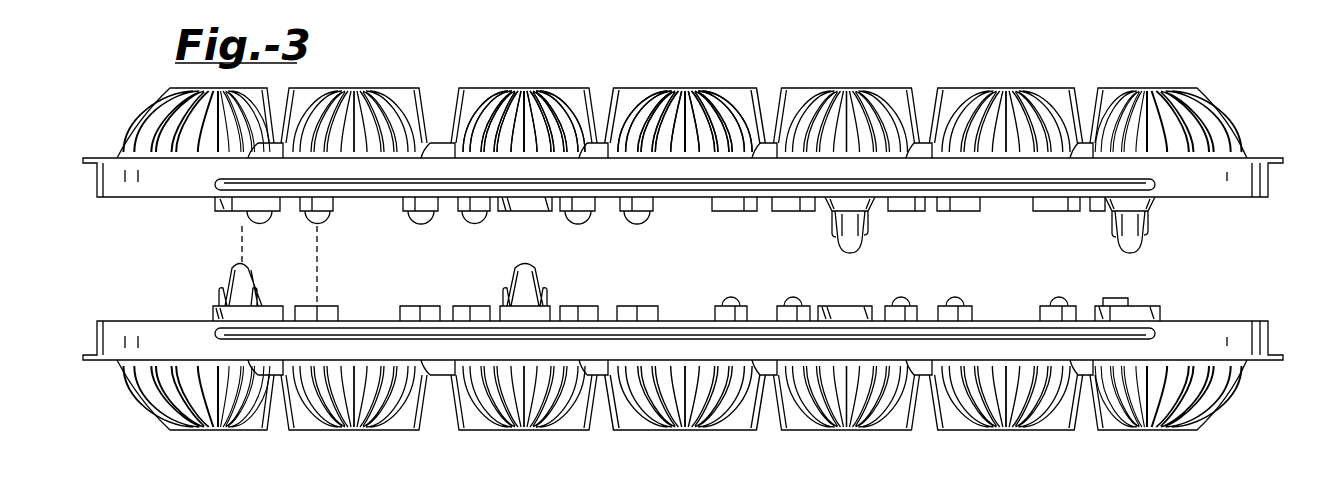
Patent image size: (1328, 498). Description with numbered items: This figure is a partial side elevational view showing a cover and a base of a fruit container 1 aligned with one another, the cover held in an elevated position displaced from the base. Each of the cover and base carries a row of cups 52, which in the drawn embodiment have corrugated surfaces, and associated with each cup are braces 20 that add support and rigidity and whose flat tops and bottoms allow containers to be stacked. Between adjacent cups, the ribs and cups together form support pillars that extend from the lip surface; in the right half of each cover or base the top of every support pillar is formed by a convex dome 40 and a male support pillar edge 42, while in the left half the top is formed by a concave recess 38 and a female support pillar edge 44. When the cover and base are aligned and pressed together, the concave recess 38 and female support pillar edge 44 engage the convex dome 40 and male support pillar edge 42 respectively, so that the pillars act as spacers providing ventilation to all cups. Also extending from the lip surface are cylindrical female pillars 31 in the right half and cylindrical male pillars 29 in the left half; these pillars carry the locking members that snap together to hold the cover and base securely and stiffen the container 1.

The tray 1 is at (1262, 138).
The braces 20 is at (313, 89).
The cylindrical male pillars 29 is at (1159, 207).
The cylindrical female pillars 31 is at (217, 199).
The concave recess 38 is at (430, 303).
The convex dome 40 is at (323, 221).
The support pillar edge 42 is at (972, 304).
The female support pillar edge 44 is at (334, 306).
The cups 52 is at (574, 88).